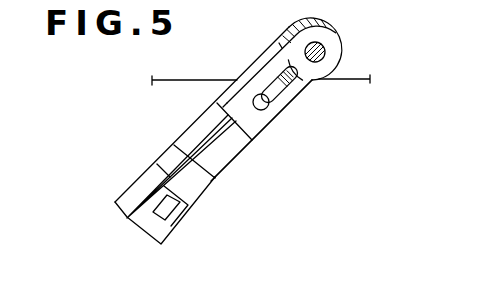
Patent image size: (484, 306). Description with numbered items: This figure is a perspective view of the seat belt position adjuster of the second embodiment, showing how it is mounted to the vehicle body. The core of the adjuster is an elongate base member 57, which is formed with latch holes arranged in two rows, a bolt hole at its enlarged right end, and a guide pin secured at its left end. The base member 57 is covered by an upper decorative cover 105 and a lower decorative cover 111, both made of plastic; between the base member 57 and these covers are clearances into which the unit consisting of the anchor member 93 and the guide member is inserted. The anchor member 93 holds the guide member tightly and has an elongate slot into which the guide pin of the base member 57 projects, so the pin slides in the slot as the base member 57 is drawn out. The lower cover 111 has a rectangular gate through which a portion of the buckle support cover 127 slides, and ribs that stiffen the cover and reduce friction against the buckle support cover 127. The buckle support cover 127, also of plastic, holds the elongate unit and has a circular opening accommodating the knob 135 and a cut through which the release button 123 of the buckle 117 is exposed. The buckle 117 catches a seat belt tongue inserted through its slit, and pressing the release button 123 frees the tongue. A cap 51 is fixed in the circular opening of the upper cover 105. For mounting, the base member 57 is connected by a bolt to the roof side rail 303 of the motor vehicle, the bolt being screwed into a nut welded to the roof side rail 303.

The base member 57 is at (246, 58).
The lower decorative cover 111 is at (242, 77).
The cap 51 is at (325, 51).
The roof side rail 303 is at (352, 72).
The upper decorative cover 105 is at (300, 90).
The knob 135 is at (266, 108).
The anchor member 93 is at (182, 129).
The buckle support cover 127 is at (238, 158).
The buckle 117 is at (145, 226).
The release button 123 is at (168, 210).